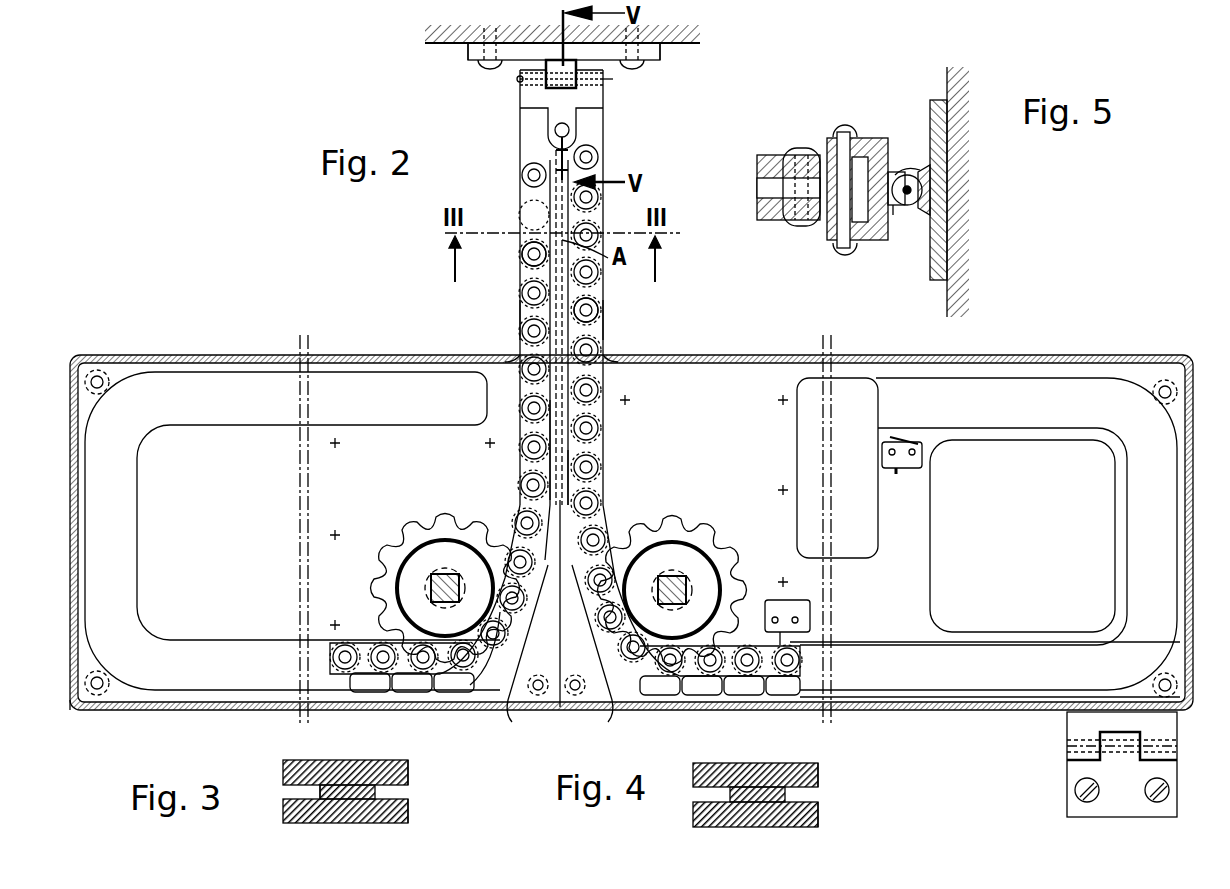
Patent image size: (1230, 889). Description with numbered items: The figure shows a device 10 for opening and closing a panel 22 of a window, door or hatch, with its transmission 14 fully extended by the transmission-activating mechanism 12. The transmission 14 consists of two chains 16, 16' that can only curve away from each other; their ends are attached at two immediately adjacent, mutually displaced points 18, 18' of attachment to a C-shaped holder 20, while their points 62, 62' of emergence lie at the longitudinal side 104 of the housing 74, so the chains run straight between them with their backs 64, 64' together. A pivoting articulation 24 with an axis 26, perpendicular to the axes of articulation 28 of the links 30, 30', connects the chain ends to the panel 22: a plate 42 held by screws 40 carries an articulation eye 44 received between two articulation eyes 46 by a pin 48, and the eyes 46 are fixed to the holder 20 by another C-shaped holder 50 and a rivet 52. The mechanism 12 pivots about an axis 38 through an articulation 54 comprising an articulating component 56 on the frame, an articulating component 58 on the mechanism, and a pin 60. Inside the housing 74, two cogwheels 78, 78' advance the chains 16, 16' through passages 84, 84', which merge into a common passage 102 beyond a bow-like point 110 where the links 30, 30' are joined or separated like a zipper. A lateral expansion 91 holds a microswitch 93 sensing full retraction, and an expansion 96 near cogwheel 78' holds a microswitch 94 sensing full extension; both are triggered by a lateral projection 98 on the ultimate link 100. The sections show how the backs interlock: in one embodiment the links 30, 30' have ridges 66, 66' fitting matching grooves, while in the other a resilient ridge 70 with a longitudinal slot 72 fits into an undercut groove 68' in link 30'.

In FIG. 2, the device 10 is at (323, 298).
In FIG. 2, the transmission-activating mechanism 12 is at (201, 352).
In FIG. 2, the transmission 14 is at (519, 293).
In FIG. 2, the chain 16 is at (501, 320).
In FIG. 3, the chain 16 is at (331, 754).
In FIG. 2, the chain 16' is at (640, 320).
In FIG. 3, the chain 16' is at (428, 754).
In FIG. 2, the point of attachment 18 is at (506, 165).
In FIG. 2, the point of attachment 18' is at (614, 153).
In FIG. 2, the C-shaped holder 20 is at (600, 125).
In FIG. 5, the C-shaped holder 20 is at (782, 155).
In FIG. 2, the panel 22 is at (672, 48).
In FIG. 5, the panel 22 is at (960, 80).
In FIG. 2, the pivoting articulation 24 is at (518, 92).
In FIG. 5, the pivoting articulation 24 is at (905, 172).
In FIG. 2, the axis 26 is at (520, 80).
In FIG. 5, the axis 26 is at (915, 215).
In FIG. 2, the axis of articulation 28 is at (522, 200).
In FIG. 2, the link 30 is at (514, 261).
In FIG. 3, the link 30 is at (324, 815).
In FIG. 4, the link 30 is at (734, 817).
In FIG. 2, the link 30' is at (615, 302).
In FIG. 3, the link 30' is at (436, 814).
In FIG. 4, the link 30' is at (844, 761).
In FIG. 2, the axis 38 is at (1180, 748).
In FIG. 2, the screws 40 is at (482, 68).
In FIG. 2, the plate 42 is at (468, 52).
In FIG. 5, the plate 42 is at (940, 255).
In FIG. 2, the articulation eye 44 is at (590, 78).
In FIG. 5, the articulation eye 44 is at (950, 160).
In FIG. 2, the articulation eyes 46 is at (603, 78).
In FIG. 5, the articulation eyes 46 is at (952, 182).
In FIG. 5, the pin 48 is at (950, 200).
In FIG. 5, the C-shaped holder 50 is at (868, 240).
In FIG. 2, the rivet 52 is at (556, 132).
In FIG. 5, the rivet 52 is at (845, 132).
In FIG. 2, the articulation 54 is at (1067, 778).
In FIG. 2, the articulating component 56 is at (1177, 805).
In FIG. 2, the articulating component 58 is at (1067, 740).
In FIG. 2, the pin 60 is at (1067, 752).
In FIG. 2, the point of emergence 62 is at (485, 342).
In FIG. 2, the point of emergence 62' is at (654, 342).
In FIG. 2, the back 64 is at (531, 623).
In FIG. 2, the back 64' is at (589, 655).
In FIG. 3, the ridge 66 is at (354, 761).
In FIG. 3, the ridge 66' is at (281, 788).
In FIG. 4, the undercut groove 68' is at (755, 758).
In FIG. 4, the ridge 70 is at (818, 817).
In FIG. 4, the longitudinal slot 72 is at (765, 775).
In FIG. 2, the housing 74 is at (125, 712).
In FIG. 2, the cogwheel 78 is at (445, 567).
In FIG. 2, the cogwheel 78' is at (672, 568).
In FIG. 2, the passage 84 is at (292, 531).
In FIG. 2, the passage 84' is at (987, 534).
In FIG. 2, the lateral expansion 91 is at (897, 472).
In FIG. 2, the microswitch 93 is at (920, 458).
In FIG. 2, the microswitch 94 is at (800, 618).
In FIG. 2, the expansion 96 is at (778, 600).
In FIG. 2, the lateral projection 98 is at (800, 640).
In FIG. 2, the ultimate link 100 is at (800, 660).
In FIG. 2, the common passage 102 is at (590, 452).
In FIG. 2, the longitudinal side 104 is at (1040, 362).
In FIG. 2, the bow-like point 110 is at (585, 508).